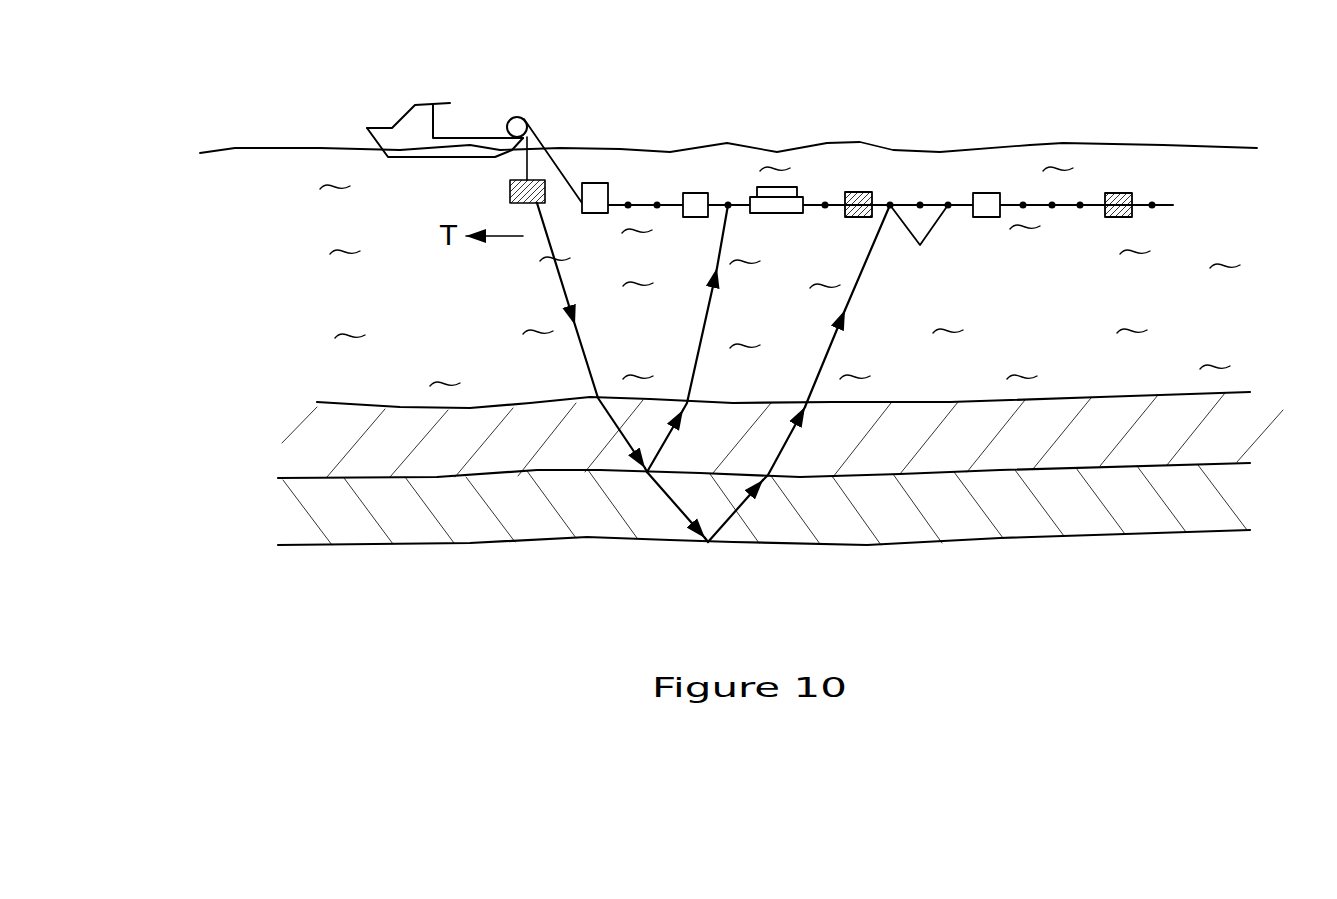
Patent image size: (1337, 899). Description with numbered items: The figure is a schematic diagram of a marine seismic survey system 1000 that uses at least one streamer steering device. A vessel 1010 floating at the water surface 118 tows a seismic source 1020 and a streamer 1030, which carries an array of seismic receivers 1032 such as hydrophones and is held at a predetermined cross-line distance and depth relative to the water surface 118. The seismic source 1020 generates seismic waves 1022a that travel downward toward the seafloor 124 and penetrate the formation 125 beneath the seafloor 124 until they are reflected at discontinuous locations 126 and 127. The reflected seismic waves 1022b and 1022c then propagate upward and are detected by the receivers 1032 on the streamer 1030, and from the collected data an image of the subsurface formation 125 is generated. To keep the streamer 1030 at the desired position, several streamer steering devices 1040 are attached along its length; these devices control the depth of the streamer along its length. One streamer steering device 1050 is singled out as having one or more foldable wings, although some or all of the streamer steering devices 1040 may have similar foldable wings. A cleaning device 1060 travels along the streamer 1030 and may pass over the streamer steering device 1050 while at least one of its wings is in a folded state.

The marine seismic survey system 1000 is at (648, 23).
The vessel 1010 is at (465, 138).
The seismic source 1020 is at (510, 195).
The seismic waves 1022a is at (590, 360).
The reflected seismic wave 1022b is at (710, 313).
The reflected seismic wave 1022c is at (833, 343).
The streamer 1030 is at (1185, 193).
The seismic receivers 1032 is at (825, 205).
The streamer steering devices 1040 is at (595, 183).
The streamer steering device 1050 is at (857, 192).
The cleaning device 1060 is at (782, 213).
The water surface 118 is at (1158, 145).
The seafloor 124 is at (1057, 400).
The formation 125 is at (508, 463).
The discontinuous location 126 is at (647, 473).
The discontinuous location 127 is at (708, 543).